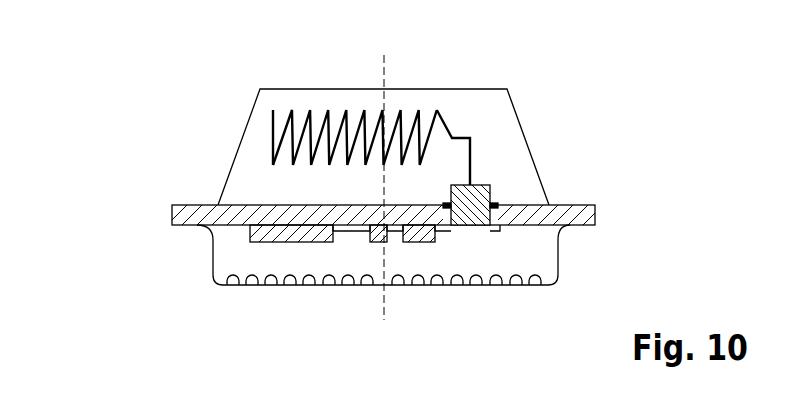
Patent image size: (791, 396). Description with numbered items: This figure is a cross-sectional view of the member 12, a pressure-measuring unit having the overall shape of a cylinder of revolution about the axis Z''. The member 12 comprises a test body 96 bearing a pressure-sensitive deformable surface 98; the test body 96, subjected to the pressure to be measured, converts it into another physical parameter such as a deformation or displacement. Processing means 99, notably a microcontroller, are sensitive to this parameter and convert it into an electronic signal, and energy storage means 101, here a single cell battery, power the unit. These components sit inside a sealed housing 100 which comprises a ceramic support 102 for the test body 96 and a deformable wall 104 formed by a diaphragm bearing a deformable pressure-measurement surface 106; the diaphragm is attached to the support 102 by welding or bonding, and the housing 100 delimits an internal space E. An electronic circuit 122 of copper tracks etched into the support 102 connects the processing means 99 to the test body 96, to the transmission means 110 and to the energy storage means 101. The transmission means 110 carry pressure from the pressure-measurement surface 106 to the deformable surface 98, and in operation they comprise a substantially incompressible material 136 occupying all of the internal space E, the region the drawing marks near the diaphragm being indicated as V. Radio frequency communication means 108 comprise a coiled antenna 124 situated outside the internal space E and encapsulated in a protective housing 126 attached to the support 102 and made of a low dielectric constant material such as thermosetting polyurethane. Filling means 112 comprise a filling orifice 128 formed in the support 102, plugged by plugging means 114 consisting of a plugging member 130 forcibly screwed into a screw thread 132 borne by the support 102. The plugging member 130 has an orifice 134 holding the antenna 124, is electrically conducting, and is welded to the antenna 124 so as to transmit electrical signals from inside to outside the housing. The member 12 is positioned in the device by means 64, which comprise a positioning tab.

The member 12 is at (376, 199).
The means 64 is at (402, 168).
The test body 96 is at (288, 237).
The pressure-sensitive deformable surface 98 is at (306, 242).
The processing means 99 is at (430, 243).
The sealed housing 100 is at (415, 267).
The energy storage means 101 is at (380, 243).
The support 102 is at (600, 207).
The deformable wall 104 is at (385, 304).
The pressure-measurement surface 106 is at (245, 287).
The radio frequency communication means 108 is at (455, 113).
The pressure transmission means 110 is at (222, 237).
The filling means 112 is at (494, 207).
The plugging means 114 is at (497, 172).
The electronic circuit 122 is at (350, 231).
The antenna 124 is at (273, 125).
The housing 126 is at (258, 93).
The filling orifice 128 is at (485, 228).
The plugging member 130 is at (475, 232).
The screw thread 132 is at (447, 206).
The orifice 134 is at (475, 215).
The incompressible material 136 is at (405, 267).
The internal space E is at (386, 304).
The region V is at (358, 304).
The axis Z'' is at (343, 174).